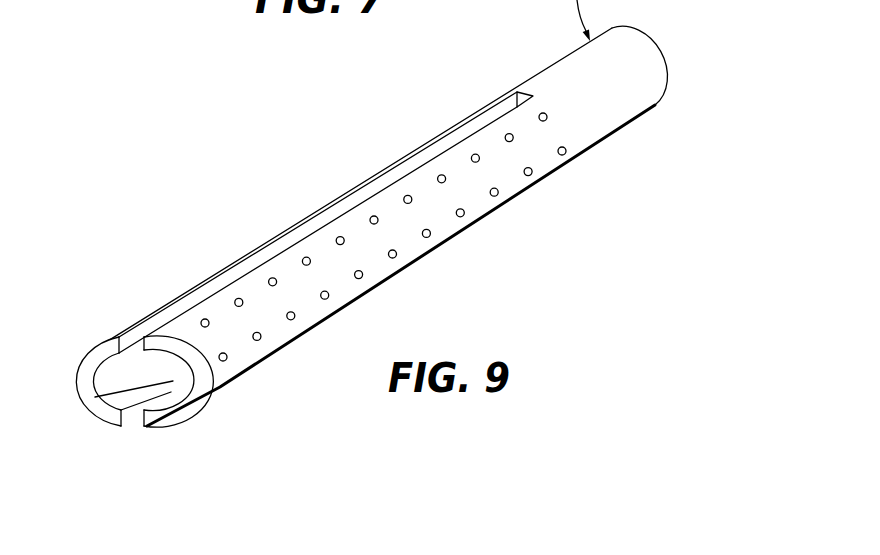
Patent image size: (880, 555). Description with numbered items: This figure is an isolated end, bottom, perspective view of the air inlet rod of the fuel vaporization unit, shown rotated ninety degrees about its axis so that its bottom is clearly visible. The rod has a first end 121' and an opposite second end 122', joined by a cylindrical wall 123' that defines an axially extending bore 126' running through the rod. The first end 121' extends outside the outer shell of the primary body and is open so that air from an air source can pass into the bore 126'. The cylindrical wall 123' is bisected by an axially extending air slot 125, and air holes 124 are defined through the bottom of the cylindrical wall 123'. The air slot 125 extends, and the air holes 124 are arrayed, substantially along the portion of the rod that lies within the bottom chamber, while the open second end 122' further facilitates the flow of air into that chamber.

The first end 121' is at (432, 182).
The second end 122' is at (121, 364).
The cylindrical wall 123' is at (401, 265).
The air holes 124 is at (566, 156).
The air slot 125 is at (133, 431).
The bore 126' is at (103, 383).